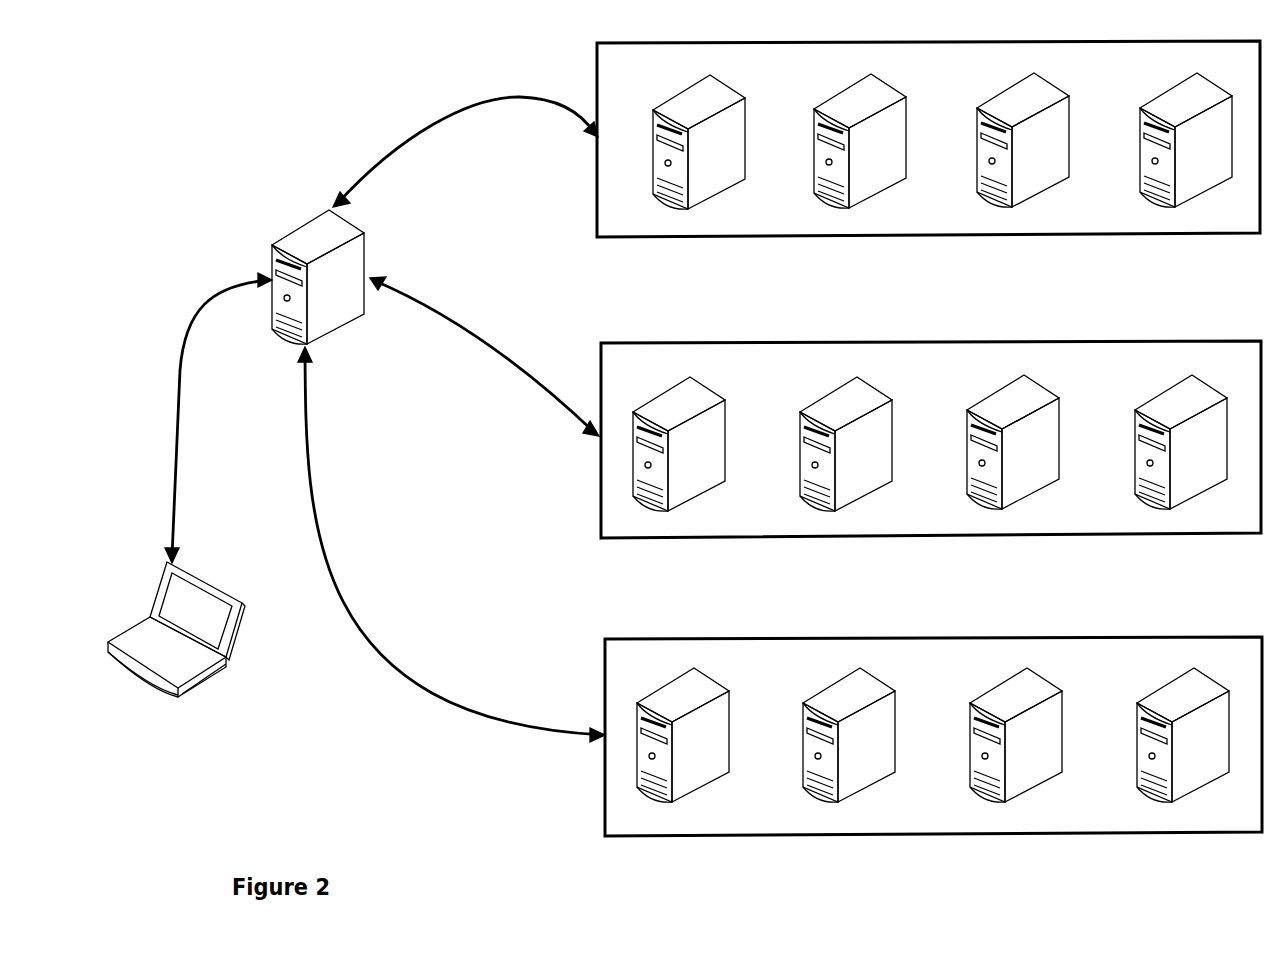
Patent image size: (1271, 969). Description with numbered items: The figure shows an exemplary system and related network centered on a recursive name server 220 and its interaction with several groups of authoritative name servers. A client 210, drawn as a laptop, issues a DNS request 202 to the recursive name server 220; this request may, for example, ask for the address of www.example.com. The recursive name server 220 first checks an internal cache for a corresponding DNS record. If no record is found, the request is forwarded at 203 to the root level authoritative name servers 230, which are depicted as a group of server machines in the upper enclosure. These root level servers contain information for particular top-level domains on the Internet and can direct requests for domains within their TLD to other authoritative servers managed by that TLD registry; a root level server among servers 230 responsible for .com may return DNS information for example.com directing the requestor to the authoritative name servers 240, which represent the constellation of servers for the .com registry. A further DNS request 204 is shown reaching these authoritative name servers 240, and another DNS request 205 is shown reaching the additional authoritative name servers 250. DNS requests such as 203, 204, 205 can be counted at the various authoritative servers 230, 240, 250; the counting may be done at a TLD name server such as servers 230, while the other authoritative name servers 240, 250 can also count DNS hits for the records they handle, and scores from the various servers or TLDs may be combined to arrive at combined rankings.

The DNS request 202 is at (197, 418).
The forwarded DNS request 203 is at (465, 143).
The DNS request 204 is at (484, 356).
The DNS request 205 is at (451, 544).
The client 210 is at (176, 654).
The recursive name server 220 is at (294, 276).
The root level authoritative name servers 230 is at (928, 139).
The authoritative name servers 240 is at (931, 439).
The authoritative name servers 250 is at (933, 736).